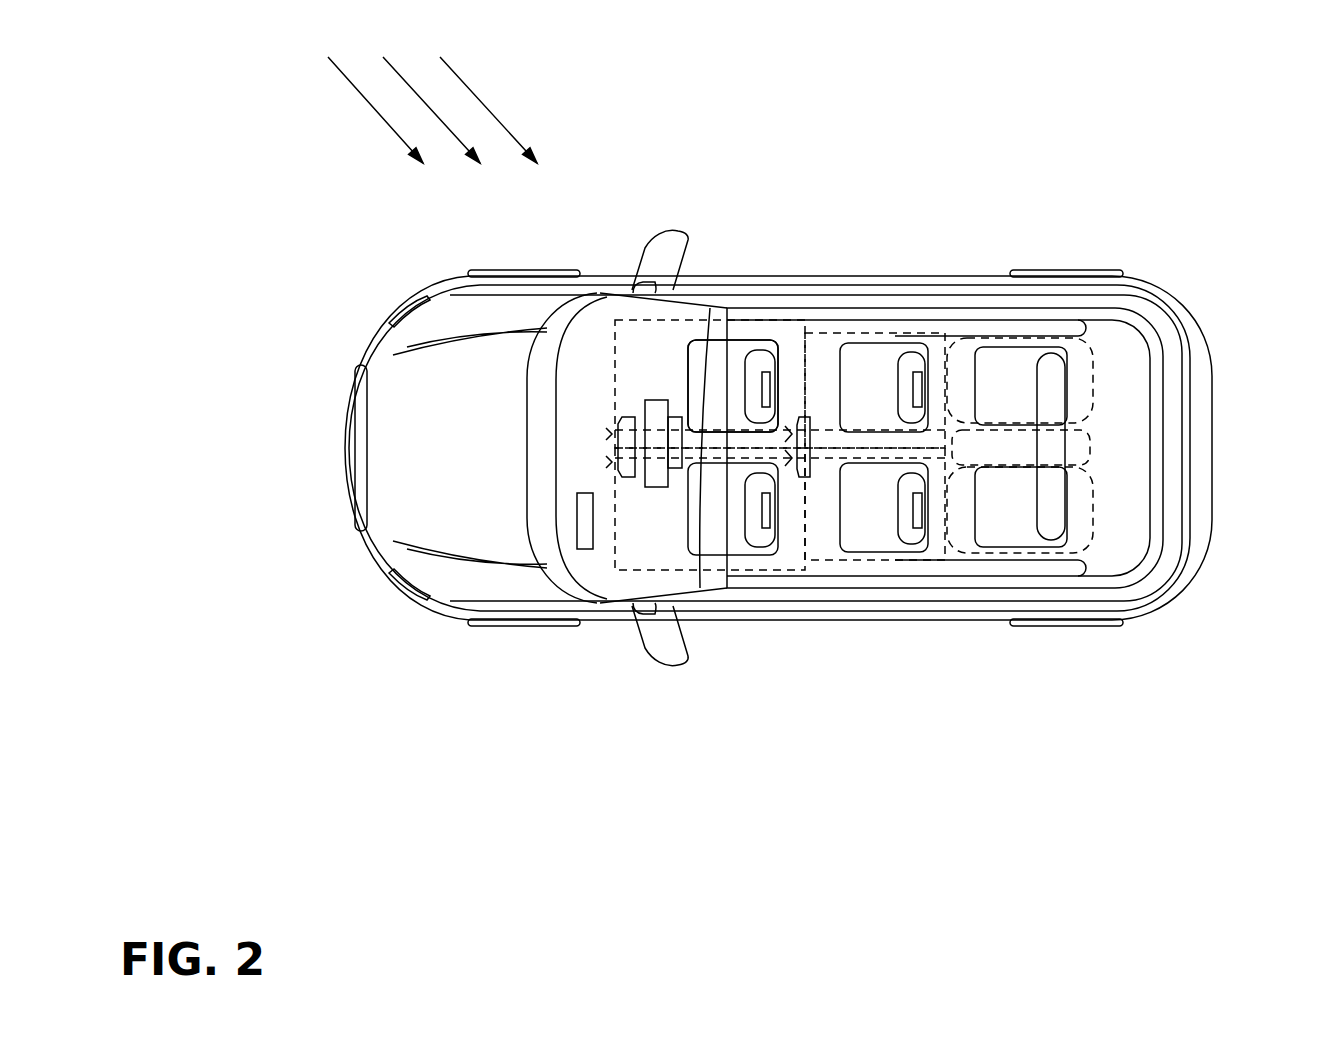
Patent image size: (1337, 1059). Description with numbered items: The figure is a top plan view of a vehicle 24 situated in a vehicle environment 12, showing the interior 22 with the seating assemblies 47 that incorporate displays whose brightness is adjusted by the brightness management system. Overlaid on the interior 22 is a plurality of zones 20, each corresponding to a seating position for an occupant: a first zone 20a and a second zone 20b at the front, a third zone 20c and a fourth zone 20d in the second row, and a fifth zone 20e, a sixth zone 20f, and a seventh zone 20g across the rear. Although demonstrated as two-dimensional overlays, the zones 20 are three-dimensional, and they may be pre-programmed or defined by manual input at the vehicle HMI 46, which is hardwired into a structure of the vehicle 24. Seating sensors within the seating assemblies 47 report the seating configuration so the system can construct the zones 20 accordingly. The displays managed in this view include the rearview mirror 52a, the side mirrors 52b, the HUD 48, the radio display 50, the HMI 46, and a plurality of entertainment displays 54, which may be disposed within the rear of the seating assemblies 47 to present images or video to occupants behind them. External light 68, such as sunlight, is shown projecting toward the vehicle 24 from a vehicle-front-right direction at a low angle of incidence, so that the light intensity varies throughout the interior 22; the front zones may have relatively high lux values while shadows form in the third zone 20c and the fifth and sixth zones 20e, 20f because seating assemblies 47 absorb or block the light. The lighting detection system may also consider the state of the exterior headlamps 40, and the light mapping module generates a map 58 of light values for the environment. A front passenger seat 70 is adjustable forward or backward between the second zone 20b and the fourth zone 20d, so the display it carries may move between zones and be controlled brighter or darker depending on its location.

The vehicle environment 12 is at (1200, 207).
The zones 20 is at (1098, 523).
The first zone 20a is at (637, 567).
The second zone 20b is at (627, 327).
The third zone 20c is at (860, 560).
The fourth zone 20d is at (847, 333).
The fifth zone 20e is at (975, 553).
The sixth zone 20f is at (1090, 450).
The seventh zone 20g is at (1097, 377).
The interior 22 is at (1104, 334).
The vehicle 24 is at (452, 617).
The exterior headlamps 40 is at (393, 317).
The vehicle human-machine interface (HMI) 46 is at (633, 417).
The seating assemblies 47 is at (1016, 527).
The heads up display (HUD) 48 is at (577, 512).
The radio display 50 is at (800, 418).
The rearview mirror 52a is at (613, 430).
The side mirrors 52b is at (690, 257).
The entertainment displays 54 is at (768, 387).
The map 58 is at (1200, 668).
The external light 68 is at (375, 113).
The front passenger seat 70 is at (737, 342).